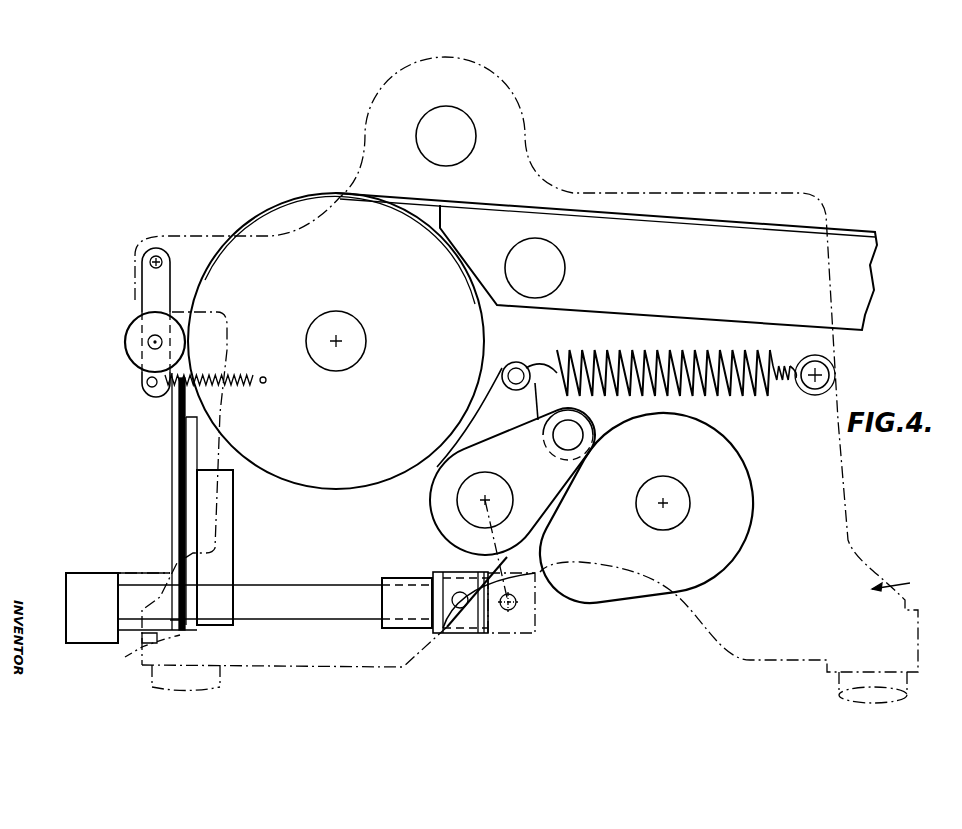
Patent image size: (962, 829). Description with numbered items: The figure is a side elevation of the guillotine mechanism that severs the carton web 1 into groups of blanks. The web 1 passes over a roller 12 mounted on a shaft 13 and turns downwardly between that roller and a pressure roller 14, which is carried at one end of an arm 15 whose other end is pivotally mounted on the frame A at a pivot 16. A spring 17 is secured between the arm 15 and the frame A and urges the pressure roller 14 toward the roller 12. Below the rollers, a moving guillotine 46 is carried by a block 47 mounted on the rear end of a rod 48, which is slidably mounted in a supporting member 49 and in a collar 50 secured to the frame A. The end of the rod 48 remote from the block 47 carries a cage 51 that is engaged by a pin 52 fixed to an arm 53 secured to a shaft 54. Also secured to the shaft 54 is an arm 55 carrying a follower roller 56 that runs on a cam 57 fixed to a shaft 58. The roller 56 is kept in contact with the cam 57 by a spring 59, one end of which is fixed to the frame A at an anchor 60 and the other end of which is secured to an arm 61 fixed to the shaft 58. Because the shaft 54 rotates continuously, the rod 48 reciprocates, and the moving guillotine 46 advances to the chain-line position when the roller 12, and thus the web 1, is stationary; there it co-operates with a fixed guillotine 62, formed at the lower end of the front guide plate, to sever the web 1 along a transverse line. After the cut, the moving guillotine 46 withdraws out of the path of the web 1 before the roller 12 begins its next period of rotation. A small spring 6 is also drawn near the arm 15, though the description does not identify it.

The web 1 is at (848, 226).
The spring 6 is at (260, 381).
The roller 12 is at (274, 216).
The shaft 13 is at (320, 322).
The pressure roller 14 is at (132, 343).
The arm 15 is at (140, 305).
The pivot 16 is at (156, 257).
The spring 17 is at (230, 395).
The moving guillotine 46 is at (148, 640).
The block 47 is at (128, 573).
The rod 48 is at (290, 598).
The supporting member 49 is at (228, 560).
The collar 50 is at (405, 578).
The cage 51 is at (463, 633).
The pin 52 is at (455, 604).
The arm 53 is at (452, 557).
The shaft 54 is at (468, 495).
The arm 55 is at (548, 490).
The follower roller 56 is at (592, 430).
The cam 57 is at (648, 598).
The shaft 58 is at (677, 493).
The spring 59 is at (738, 395).
The anchor point 60 is at (818, 362).
The arm 61 is at (490, 398).
The fixed guillotine 62 is at (205, 628).
The frame A is at (901, 580).